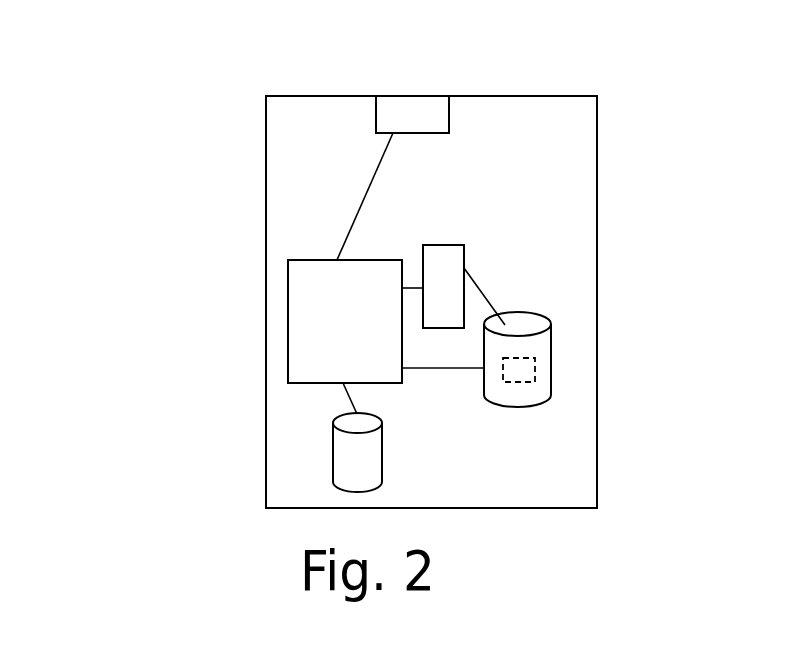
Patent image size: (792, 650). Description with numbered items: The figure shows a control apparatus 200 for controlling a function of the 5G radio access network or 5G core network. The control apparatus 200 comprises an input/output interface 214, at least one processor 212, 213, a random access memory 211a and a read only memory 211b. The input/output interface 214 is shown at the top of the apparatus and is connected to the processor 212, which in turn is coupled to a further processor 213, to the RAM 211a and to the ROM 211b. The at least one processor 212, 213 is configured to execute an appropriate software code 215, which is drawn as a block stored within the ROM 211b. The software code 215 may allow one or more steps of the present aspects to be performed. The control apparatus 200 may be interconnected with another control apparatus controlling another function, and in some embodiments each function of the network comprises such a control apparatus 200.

The control apparatus 200 is at (250, 91).
The input/output interface 214 is at (418, 117).
The processor 213 is at (434, 268).
The processor 212 is at (288, 348).
The random access memory 211a is at (333, 450).
The read only memory 211b is at (551, 393).
The software code 215 is at (533, 360).